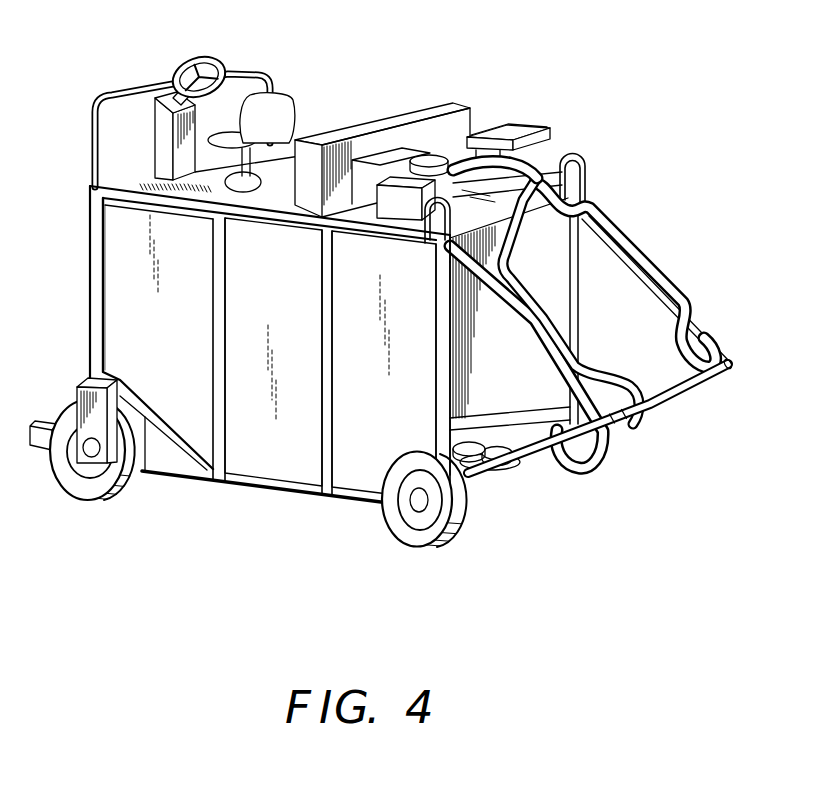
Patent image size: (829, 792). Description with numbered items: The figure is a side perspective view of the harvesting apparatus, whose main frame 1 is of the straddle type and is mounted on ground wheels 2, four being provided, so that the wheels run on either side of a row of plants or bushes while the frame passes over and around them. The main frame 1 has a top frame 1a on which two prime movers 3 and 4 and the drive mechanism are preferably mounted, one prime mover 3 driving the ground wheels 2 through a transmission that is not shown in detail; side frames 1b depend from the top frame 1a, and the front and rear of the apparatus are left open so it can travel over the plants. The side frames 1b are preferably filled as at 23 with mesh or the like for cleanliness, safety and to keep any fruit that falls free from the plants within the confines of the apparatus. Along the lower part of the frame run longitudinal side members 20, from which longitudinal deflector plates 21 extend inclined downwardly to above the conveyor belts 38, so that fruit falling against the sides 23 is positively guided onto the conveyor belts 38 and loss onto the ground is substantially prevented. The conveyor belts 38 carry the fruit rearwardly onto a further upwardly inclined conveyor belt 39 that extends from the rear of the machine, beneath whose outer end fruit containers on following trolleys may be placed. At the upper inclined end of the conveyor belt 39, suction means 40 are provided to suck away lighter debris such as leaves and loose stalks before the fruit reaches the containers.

The main frame 1 is at (252, 495).
The top frame 1a is at (97, 200).
The side frames 1b is at (98, 288).
The ground wheels 2 is at (87, 500).
The prime mover 3 is at (370, 175).
The prime mover 4 is at (523, 130).
The longitudinal side members 20 is at (352, 497).
The longitudinal deflector plates 21 is at (530, 443).
The filling of side frames 23 is at (180, 340).
The conveyor belts 38 is at (473, 470).
The inclined conveyor belt 39 is at (642, 410).
The suction means 40 is at (623, 387).